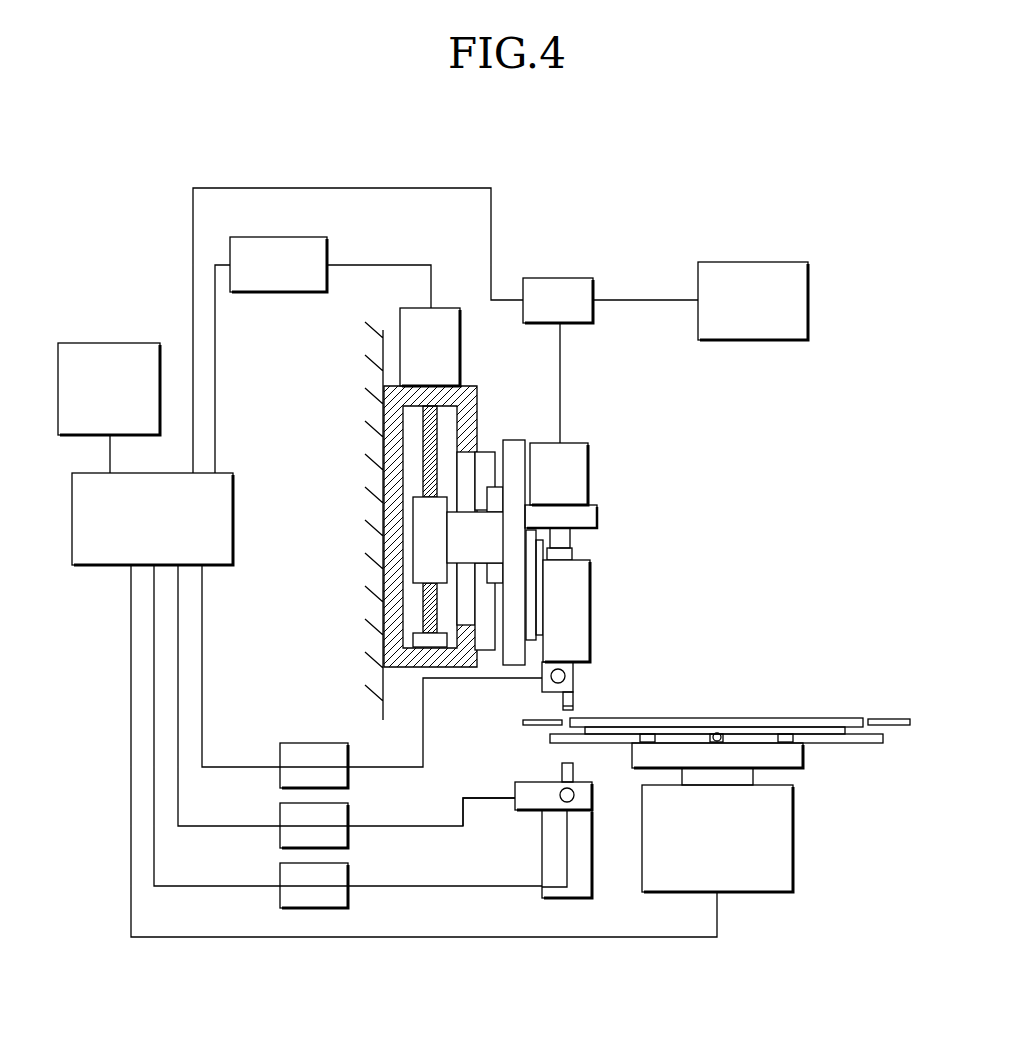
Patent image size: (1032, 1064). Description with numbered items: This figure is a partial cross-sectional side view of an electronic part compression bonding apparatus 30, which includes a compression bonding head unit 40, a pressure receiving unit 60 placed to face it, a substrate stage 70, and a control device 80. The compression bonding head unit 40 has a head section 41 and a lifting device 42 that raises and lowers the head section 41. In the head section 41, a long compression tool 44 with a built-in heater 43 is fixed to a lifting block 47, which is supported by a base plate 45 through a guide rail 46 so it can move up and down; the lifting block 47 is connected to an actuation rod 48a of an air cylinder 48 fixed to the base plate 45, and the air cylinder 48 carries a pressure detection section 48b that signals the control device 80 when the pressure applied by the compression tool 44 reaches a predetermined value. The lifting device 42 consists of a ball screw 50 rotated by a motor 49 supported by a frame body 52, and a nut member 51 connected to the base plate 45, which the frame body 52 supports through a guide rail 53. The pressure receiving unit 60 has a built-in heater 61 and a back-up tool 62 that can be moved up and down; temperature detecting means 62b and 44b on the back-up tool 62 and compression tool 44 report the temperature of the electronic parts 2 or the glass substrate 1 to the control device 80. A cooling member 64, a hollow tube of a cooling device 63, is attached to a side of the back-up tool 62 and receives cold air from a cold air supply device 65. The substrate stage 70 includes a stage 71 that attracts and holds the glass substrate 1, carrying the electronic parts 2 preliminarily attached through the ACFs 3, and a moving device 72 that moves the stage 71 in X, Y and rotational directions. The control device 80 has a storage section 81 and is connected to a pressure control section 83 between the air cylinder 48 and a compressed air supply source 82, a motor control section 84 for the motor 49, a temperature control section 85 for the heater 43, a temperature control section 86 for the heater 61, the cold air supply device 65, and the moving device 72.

The glass substrate 1 is at (792, 708).
The electronic parts 2 is at (530, 720).
The ACFs 3 is at (718, 733).
The electronic part compression bonding apparatus 30 is at (846, 220).
The compression bonding head unit 40 is at (624, 445).
The head section 41 is at (630, 548).
The lifting device 42 is at (493, 390).
The heater 43 is at (575, 672).
The compression tool 44 is at (578, 695).
The temperature detecting means 44b is at (575, 707).
The base plate 45 is at (513, 440).
The guide rail 46 is at (572, 542).
The lifting block 47 is at (590, 625).
The air cylinder 48 is at (590, 444).
The actuation rod 48a is at (597, 530).
The pressure detection section 48b is at (585, 560).
The motor 49 is at (400, 328).
The ball screw 50 is at (423, 428).
The nut member 51 is at (413, 522).
The frame body 52 is at (466, 386).
The guide rail 53 is at (480, 452).
The pressure receiving unit 60 is at (600, 850).
The heater 61 is at (574, 797).
The back-up tool 62 is at (540, 782).
The temperature detecting means 62b is at (563, 765).
The cooling device 63 is at (264, 836).
The cooling member 64 is at (513, 802).
The cold air supply device 65 is at (348, 838).
The substrate stage 70 is at (835, 797).
The stage 71 is at (803, 752).
The moving device 72 is at (793, 855).
The control device 80 is at (100, 565).
The storage section 81 is at (118, 343).
The compressed air supply source 82 is at (735, 262).
The pressure control section 83 is at (558, 278).
The motor control section 84 is at (255, 292).
The temperature control section 85 is at (348, 778).
The temperature control section 86 is at (348, 898).